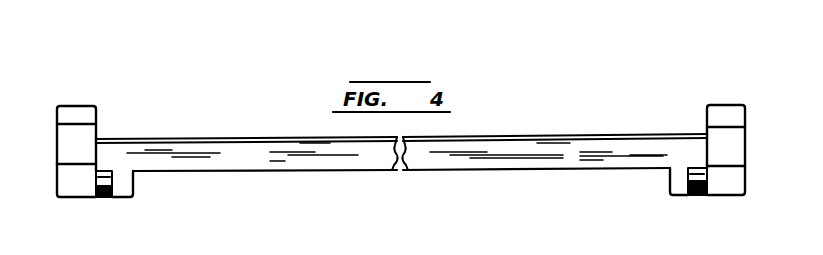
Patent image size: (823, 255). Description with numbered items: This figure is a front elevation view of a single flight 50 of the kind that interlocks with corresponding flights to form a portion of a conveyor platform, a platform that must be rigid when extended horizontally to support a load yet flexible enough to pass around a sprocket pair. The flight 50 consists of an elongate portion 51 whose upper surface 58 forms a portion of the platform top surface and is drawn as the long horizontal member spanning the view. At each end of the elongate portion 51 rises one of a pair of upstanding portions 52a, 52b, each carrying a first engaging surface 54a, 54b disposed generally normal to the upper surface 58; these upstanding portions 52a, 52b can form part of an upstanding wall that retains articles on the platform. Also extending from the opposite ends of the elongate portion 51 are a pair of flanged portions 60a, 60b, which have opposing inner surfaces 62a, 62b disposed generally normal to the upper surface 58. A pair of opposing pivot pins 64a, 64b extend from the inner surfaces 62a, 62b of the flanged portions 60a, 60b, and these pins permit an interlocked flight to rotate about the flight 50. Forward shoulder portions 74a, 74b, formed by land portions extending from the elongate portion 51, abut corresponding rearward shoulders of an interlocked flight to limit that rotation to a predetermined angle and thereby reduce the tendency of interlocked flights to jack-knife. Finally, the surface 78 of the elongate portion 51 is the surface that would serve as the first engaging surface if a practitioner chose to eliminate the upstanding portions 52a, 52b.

The flight 50 is at (218, 70).
The elongate portion 51 is at (518, 160).
The upper surface 58 is at (500, 140).
The surface of elongate portion 78 is at (340, 162).
The upstanding portion 52a is at (97, 124).
The upstanding portion 52b is at (706, 122).
The first engaging surface 54a is at (73, 146).
The first engaging surface 54b is at (731, 146).
The inner surface 62a is at (95, 171).
The inner surface 62b is at (707, 165).
The flanged portion 60a is at (83, 185).
The flanged portion 60b is at (728, 188).
The pivot pin 64a is at (107, 198).
The pivot pin 64b is at (697, 196).
The forward shoulder portion 74a is at (133, 195).
The forward shoulder portion 74b is at (672, 196).